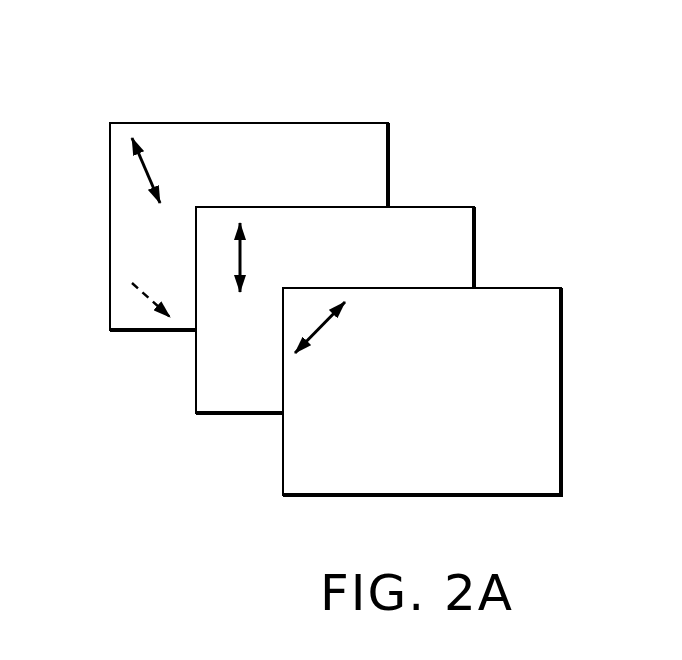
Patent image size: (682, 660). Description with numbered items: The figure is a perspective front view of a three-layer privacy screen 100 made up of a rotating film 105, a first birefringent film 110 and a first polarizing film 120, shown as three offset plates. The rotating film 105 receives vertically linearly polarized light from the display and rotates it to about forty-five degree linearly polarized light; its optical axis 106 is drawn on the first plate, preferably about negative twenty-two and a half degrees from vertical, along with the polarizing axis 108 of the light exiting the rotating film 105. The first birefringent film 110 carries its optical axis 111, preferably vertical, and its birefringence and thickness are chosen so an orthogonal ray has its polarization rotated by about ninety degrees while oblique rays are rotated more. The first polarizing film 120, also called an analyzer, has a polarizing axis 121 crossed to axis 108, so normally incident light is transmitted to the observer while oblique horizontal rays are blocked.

The privacy screen 100 is at (338, 283).
The rotating film 105 is at (110, 297).
The optical axis of the rotating film 106 is at (146, 172).
The polarizing axis of light exiting the rotating film 108 is at (153, 303).
The first birefringent film 110 is at (196, 380).
The optical axis of the first birefringent film 111 is at (238, 259).
The first polarizing film 120 is at (283, 460).
The polarizing axis of the first polarizing film 121 is at (323, 320).